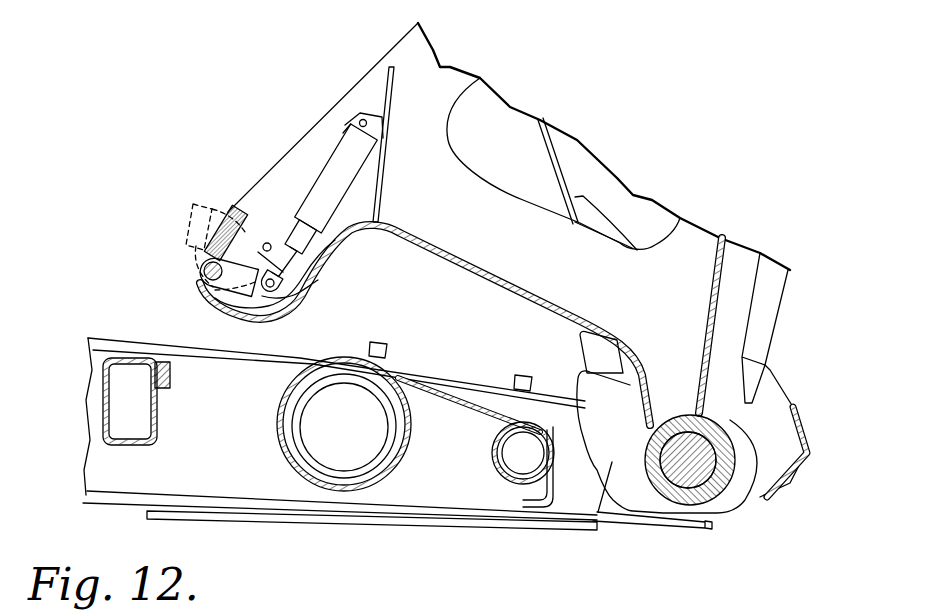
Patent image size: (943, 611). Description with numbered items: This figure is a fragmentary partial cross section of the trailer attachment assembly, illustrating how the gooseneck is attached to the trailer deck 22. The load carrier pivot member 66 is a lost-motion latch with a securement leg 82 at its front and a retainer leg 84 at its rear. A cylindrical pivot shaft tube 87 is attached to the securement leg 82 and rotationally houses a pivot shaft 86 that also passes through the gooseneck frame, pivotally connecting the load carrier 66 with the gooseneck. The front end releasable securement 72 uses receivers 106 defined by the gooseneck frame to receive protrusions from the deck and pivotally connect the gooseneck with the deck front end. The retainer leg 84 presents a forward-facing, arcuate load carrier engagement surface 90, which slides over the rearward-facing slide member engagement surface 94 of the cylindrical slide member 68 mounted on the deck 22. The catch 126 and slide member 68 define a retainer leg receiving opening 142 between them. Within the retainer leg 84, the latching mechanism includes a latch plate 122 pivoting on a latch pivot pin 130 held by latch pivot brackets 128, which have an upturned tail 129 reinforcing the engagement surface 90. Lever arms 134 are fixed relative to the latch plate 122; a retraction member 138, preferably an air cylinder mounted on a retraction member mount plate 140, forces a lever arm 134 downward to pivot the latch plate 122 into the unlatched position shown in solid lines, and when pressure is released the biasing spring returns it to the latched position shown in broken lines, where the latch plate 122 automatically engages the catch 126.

The trailer deck 22 is at (78, 372).
The load carrier pivot member 66 is at (425, 53).
The slide member 68 is at (387, 473).
The front end releasable securement 72 is at (646, 543).
The securement leg 82 is at (675, 338).
The retainer leg 84 is at (302, 145).
The pivot shaft 86 is at (700, 485).
The pivot shaft tube 87 is at (690, 473).
The load carrier engagement surface 90 is at (300, 318).
The slide member engagement surface 94 is at (277, 400).
The receivers 106 is at (813, 422).
The latch plate 122 is at (233, 203).
The catch 126 is at (163, 387).
The latch pivot brackets 128 is at (272, 310).
The upturned tail 129 is at (300, 292).
The latch pivot pin 130 is at (203, 271).
The lever arms 134 is at (258, 245).
The retraction member 138 is at (343, 133).
The retraction member mount plate 140 is at (382, 163).
The retainer leg receiving opening 142 is at (203, 391).